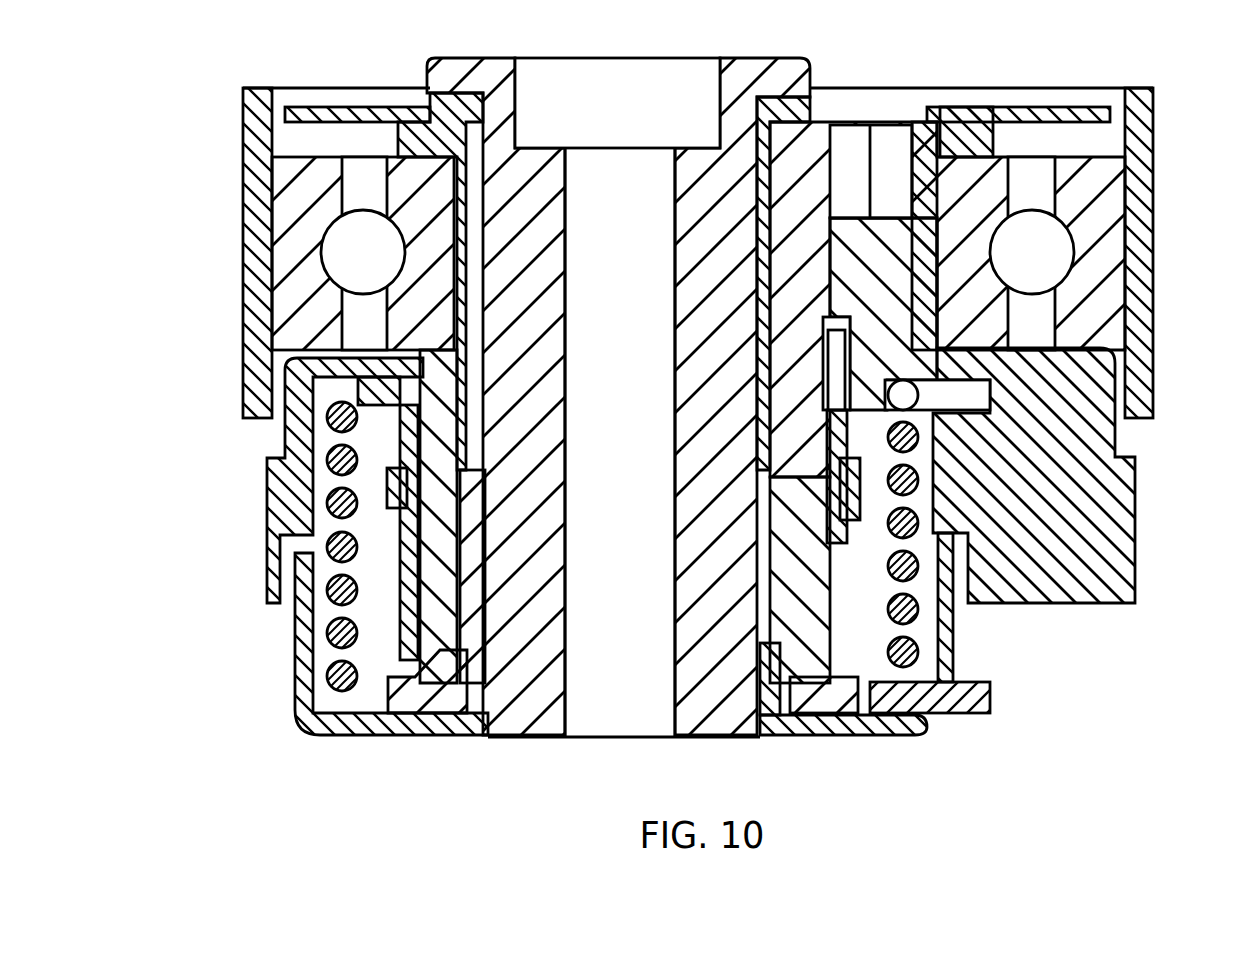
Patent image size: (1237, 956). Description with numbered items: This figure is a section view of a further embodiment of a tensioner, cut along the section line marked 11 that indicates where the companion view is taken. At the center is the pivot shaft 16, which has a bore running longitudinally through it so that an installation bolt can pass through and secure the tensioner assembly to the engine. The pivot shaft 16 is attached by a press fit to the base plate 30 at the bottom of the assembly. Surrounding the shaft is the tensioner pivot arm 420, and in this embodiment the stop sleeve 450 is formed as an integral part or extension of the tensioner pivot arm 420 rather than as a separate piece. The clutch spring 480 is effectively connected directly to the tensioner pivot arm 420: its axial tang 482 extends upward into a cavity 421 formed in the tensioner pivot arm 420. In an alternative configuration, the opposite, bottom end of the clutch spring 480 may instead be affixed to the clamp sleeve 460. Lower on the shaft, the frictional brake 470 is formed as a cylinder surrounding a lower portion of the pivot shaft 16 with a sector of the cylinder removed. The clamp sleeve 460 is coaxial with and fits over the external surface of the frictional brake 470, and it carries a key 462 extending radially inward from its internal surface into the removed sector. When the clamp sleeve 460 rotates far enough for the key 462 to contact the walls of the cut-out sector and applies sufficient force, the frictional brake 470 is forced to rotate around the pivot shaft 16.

The section line 11- 11 is at (265, 610).
The pivot shaft 16 is at (548, 707).
The base plate 30 is at (300, 690).
The tensioner pivot arm 420 is at (1070, 487).
The cavity 421 is at (833, 325).
The stop sleeve 450 is at (790, 432).
The clamp sleeve 460 is at (427, 697).
The key 462 is at (773, 620).
The frictional brake 470 is at (473, 610).
The clutch spring 480 is at (400, 650).
The axial tang 482 is at (832, 362).